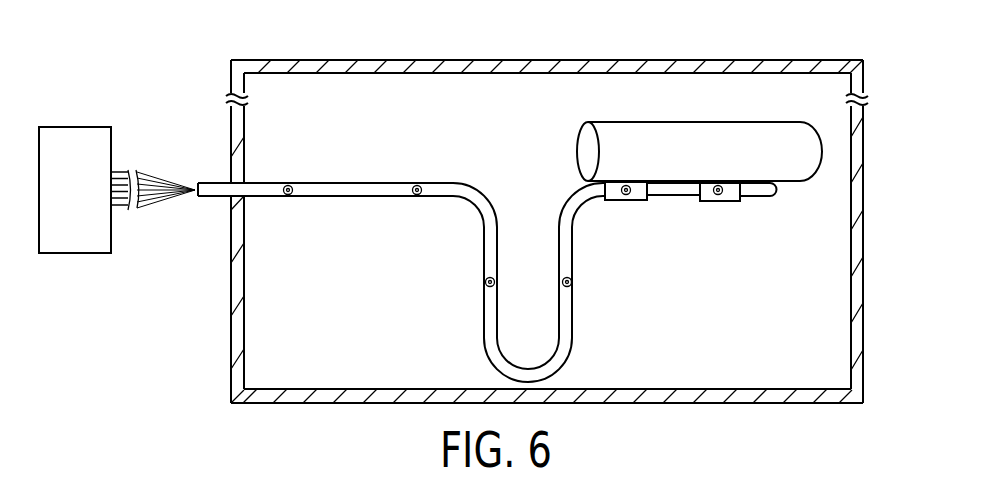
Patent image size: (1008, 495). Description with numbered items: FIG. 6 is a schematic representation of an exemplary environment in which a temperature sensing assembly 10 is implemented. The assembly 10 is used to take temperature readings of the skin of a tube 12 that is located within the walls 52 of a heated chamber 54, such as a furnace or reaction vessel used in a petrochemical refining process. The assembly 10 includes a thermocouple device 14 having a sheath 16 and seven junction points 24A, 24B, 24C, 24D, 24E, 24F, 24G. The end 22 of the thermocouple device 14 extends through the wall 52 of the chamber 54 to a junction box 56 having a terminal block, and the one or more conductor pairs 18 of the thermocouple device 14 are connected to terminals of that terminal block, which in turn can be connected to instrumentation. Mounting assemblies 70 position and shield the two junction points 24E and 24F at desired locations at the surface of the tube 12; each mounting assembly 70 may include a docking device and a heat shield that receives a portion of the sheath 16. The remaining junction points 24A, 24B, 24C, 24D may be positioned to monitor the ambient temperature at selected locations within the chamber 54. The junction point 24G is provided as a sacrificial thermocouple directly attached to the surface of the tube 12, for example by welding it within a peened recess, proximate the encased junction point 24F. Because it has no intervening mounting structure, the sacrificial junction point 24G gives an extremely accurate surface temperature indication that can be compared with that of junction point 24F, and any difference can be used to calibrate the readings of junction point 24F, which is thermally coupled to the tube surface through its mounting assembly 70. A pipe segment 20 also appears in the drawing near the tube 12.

The temperature sensing assembly 10 is at (529, 214).
The tube 12 is at (700, 121).
The thermocouple device 14 is at (510, 249).
The sheath 16 is at (330, 182).
The conductor pairs 18 is at (172, 207).
The conduit outlet segment 20 is at (770, 190).
The end of the thermocouple device 22 is at (217, 182).
The junction point 24A is at (286, 182).
The junction point 24B is at (417, 184).
The junction point 24C is at (486, 282).
The junction point 24D is at (571, 282).
The junction point 24E is at (627, 184).
The junction point 24F is at (728, 203).
The sacrificial junction point 24G is at (718, 185).
The wall 52 is at (548, 60).
The heated chamber 54 is at (461, 108).
The junction box 56 is at (70, 127).
The mounting assembly 70 is at (628, 204).